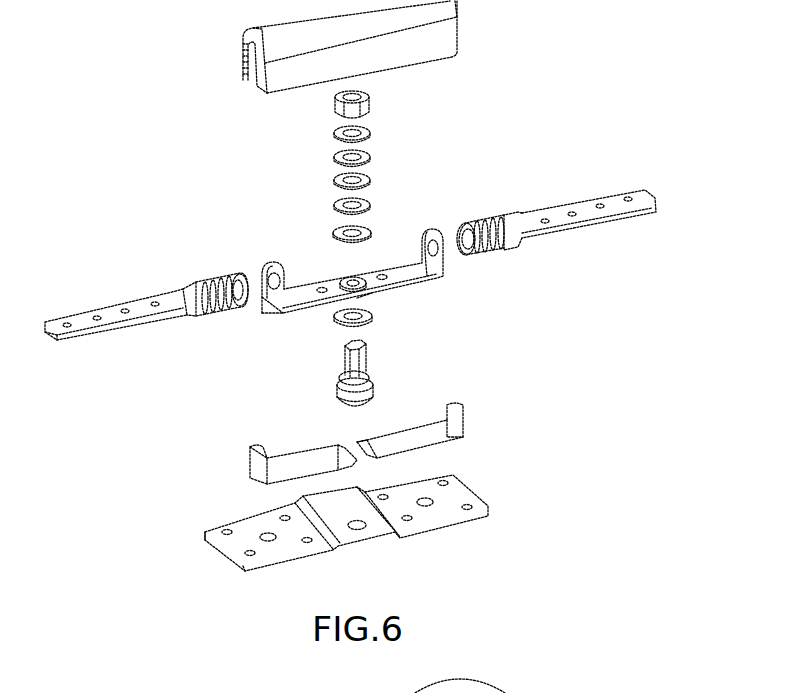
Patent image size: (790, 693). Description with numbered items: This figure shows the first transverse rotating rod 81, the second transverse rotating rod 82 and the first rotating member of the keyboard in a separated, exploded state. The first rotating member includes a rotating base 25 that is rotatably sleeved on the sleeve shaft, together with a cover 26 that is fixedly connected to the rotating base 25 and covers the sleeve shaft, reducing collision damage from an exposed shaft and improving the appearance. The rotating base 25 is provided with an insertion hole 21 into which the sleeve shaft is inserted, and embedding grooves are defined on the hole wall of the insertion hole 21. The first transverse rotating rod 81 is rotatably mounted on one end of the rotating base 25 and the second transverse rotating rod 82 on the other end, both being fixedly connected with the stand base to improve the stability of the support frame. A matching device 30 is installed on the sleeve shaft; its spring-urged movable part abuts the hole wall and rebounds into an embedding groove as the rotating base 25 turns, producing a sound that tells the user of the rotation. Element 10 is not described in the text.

The cover 26 is at (392, 50).
The rotating base 25 is at (401, 262).
The insertion hole 21 is at (342, 278).
The first transverse rotating rod 81 is at (586, 222).
The second transverse rotating rod 82 is at (125, 323).
The matching device 30 is at (360, 380).
The base 10 is at (370, 401).